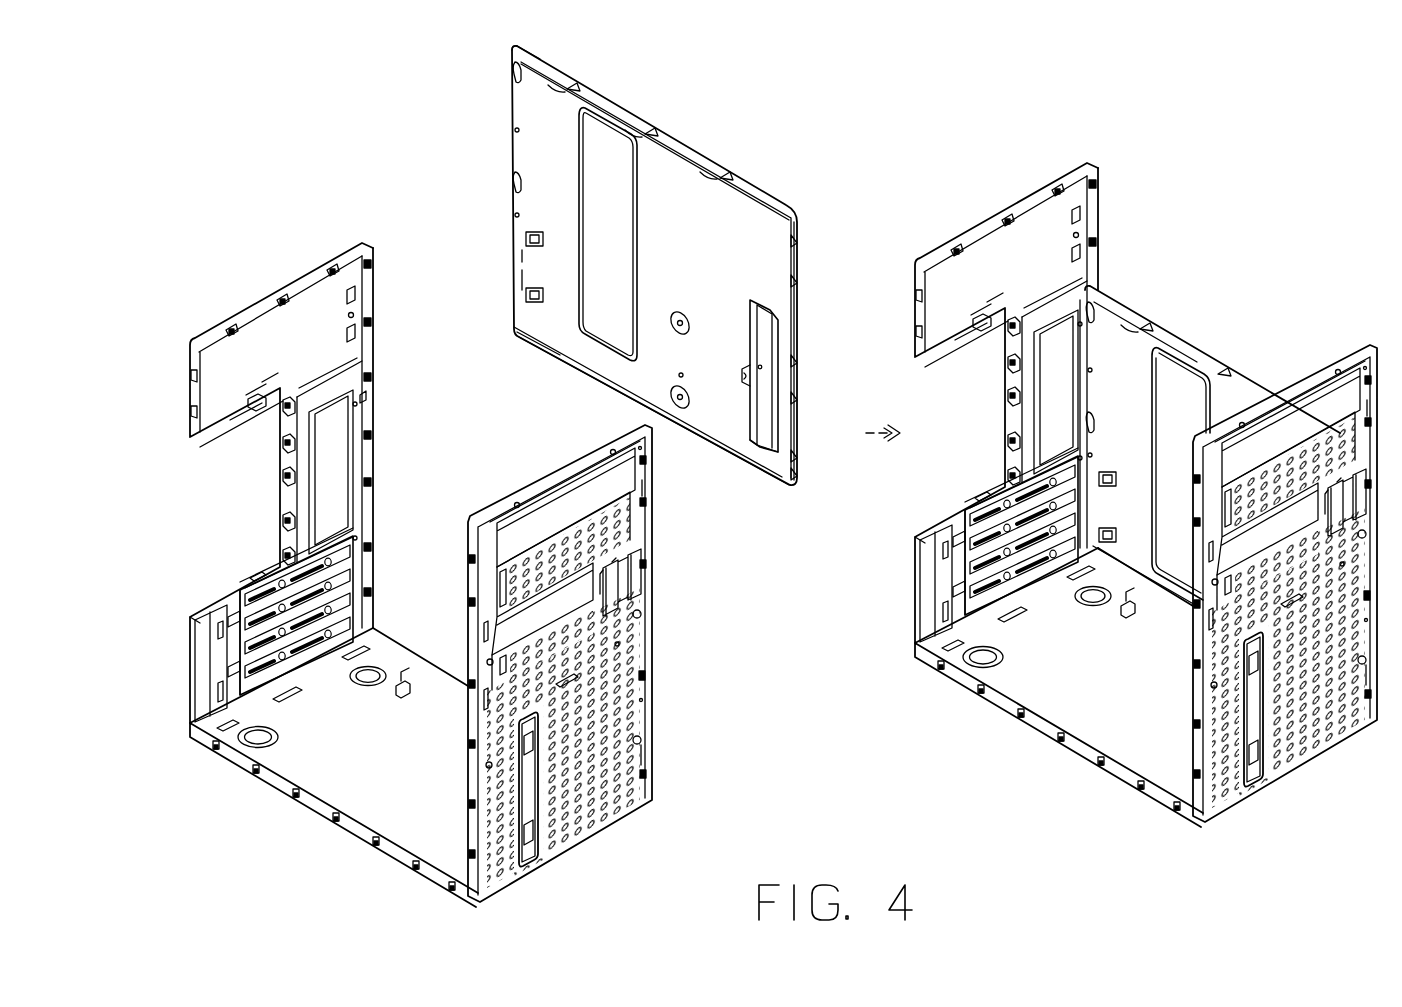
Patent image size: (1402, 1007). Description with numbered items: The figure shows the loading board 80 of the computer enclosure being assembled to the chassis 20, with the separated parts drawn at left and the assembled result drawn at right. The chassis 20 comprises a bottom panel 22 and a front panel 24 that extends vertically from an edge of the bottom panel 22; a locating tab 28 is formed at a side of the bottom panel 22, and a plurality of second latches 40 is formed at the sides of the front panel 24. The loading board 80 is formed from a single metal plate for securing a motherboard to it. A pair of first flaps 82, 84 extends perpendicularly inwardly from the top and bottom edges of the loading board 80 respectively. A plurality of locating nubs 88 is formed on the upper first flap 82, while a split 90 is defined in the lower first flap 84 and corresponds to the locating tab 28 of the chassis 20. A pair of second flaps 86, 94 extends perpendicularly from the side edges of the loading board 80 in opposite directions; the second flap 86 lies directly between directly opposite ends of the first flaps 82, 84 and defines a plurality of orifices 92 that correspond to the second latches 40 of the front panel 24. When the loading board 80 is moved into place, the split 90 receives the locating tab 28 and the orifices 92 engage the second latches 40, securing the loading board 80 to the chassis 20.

The chassis 20 is at (465, 575).
The bottom panel 22 is at (398, 702).
The front panel 24 is at (646, 618).
The locating tab 28 is at (409, 686).
The second latch 40 is at (646, 677).
The loading board 80 is at (692, 299).
The first flap 82 is at (692, 157).
The first flap 84 is at (734, 462).
The second flap 86 is at (794, 378).
The locating nub 88 is at (575, 87).
The split 90 is at (560, 358).
The orifice 92 is at (798, 256).
The second flap 94 is at (513, 47).